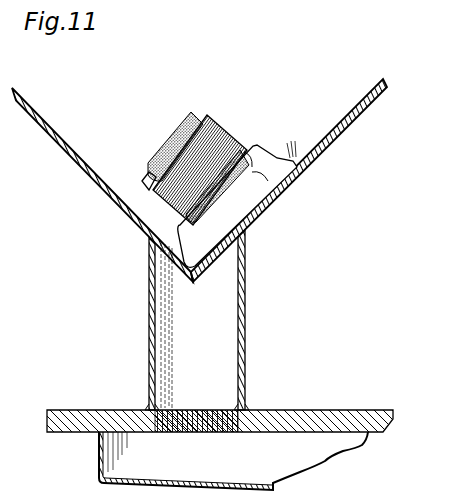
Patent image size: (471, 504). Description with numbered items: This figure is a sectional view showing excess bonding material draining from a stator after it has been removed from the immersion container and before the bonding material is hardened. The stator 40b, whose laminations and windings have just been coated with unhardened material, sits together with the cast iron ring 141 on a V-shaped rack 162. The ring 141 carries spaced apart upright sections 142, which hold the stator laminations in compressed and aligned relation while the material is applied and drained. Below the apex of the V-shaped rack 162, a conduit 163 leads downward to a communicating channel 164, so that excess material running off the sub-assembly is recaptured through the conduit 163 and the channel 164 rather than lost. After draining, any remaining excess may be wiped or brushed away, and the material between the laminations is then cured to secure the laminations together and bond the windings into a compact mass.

The V-shaped rack 162 is at (50, 124).
The cast iron ring 141 is at (298, 160).
The upright section 142 is at (258, 154).
The stator 40b is at (227, 118).
The conduit 163 is at (246, 323).
The communicating channel 164 is at (150, 463).